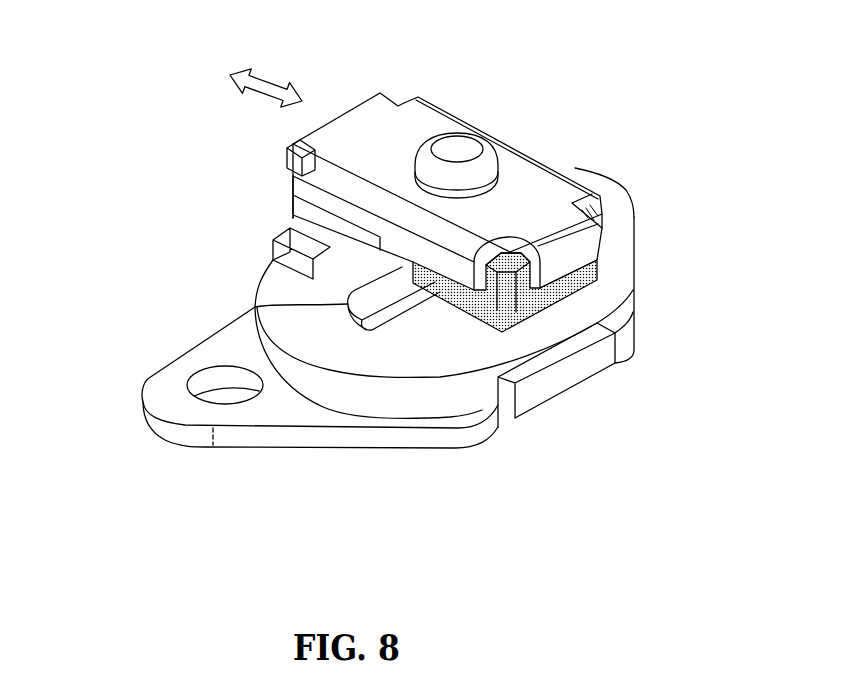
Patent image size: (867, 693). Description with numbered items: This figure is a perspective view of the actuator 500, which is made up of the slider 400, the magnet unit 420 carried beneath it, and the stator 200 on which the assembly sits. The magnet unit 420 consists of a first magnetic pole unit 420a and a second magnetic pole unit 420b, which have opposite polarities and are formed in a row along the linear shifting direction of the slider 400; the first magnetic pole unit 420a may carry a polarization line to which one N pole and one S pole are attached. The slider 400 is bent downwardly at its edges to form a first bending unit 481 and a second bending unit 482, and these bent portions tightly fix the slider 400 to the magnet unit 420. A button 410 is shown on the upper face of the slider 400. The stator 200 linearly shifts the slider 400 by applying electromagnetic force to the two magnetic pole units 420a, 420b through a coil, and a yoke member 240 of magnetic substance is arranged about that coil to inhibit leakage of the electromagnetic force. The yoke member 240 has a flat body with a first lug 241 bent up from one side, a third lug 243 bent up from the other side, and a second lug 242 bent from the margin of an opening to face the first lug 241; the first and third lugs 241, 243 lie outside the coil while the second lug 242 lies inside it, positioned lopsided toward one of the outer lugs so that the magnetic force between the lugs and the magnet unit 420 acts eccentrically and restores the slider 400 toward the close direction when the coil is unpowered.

The actuator 500 is at (104, 90).
The stator 200 is at (299, 446).
The yoke member 240 is at (172, 382).
The first lug 241 is at (278, 249).
The second lug 242 is at (256, 306).
The third lug 243 is at (574, 376).
The slider 400 is at (533, 176).
The button 410 is at (458, 148).
The magnet unit 420 is at (308, 222).
The first magnetic pole unit 420a is at (303, 214).
The second magnetic pole unit 420b is at (533, 307).
The first bending unit 481 is at (316, 172).
The second bending unit 482 is at (590, 253).